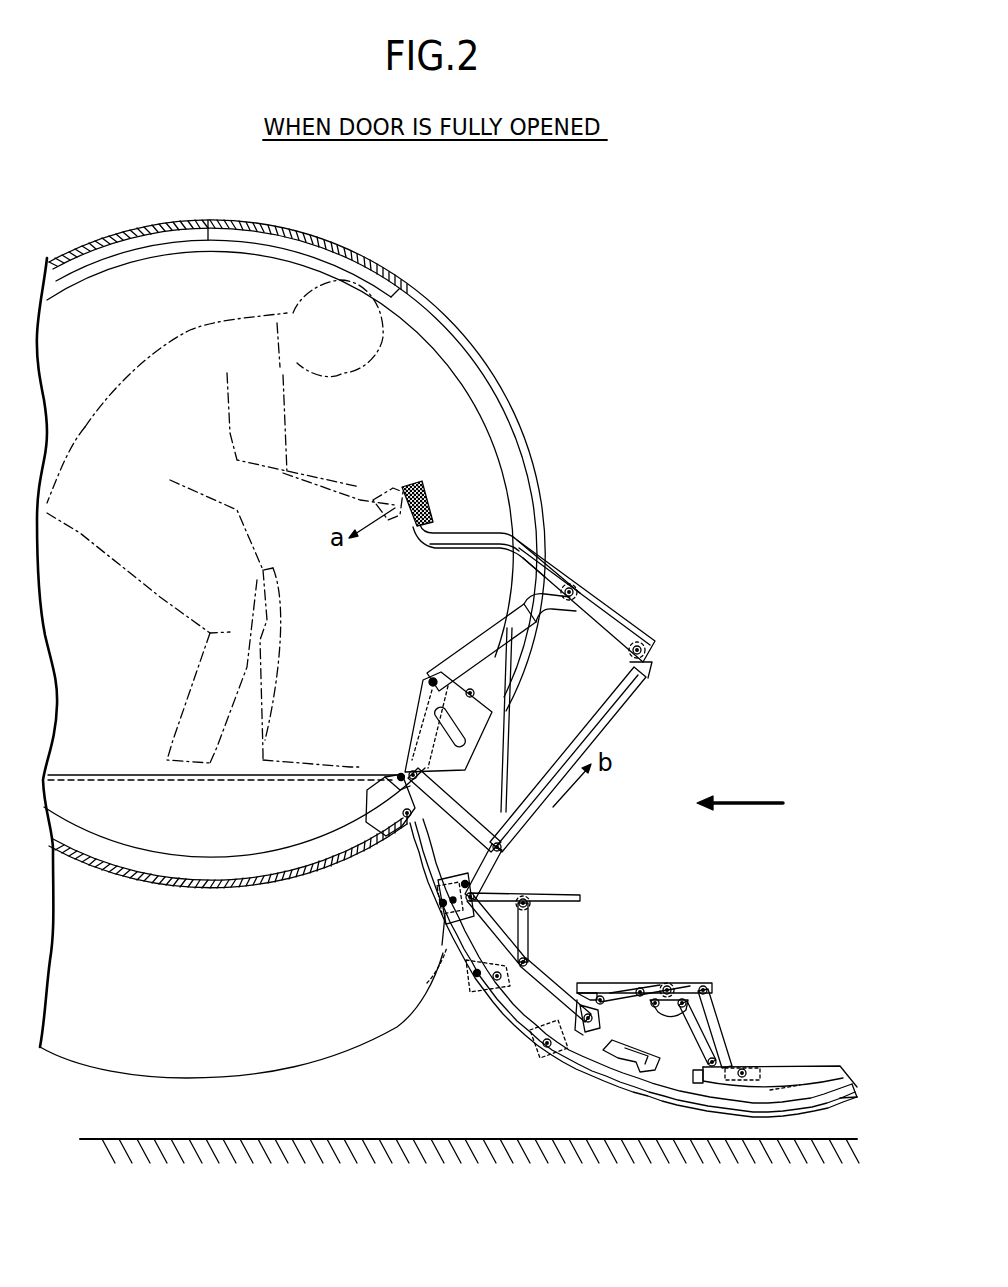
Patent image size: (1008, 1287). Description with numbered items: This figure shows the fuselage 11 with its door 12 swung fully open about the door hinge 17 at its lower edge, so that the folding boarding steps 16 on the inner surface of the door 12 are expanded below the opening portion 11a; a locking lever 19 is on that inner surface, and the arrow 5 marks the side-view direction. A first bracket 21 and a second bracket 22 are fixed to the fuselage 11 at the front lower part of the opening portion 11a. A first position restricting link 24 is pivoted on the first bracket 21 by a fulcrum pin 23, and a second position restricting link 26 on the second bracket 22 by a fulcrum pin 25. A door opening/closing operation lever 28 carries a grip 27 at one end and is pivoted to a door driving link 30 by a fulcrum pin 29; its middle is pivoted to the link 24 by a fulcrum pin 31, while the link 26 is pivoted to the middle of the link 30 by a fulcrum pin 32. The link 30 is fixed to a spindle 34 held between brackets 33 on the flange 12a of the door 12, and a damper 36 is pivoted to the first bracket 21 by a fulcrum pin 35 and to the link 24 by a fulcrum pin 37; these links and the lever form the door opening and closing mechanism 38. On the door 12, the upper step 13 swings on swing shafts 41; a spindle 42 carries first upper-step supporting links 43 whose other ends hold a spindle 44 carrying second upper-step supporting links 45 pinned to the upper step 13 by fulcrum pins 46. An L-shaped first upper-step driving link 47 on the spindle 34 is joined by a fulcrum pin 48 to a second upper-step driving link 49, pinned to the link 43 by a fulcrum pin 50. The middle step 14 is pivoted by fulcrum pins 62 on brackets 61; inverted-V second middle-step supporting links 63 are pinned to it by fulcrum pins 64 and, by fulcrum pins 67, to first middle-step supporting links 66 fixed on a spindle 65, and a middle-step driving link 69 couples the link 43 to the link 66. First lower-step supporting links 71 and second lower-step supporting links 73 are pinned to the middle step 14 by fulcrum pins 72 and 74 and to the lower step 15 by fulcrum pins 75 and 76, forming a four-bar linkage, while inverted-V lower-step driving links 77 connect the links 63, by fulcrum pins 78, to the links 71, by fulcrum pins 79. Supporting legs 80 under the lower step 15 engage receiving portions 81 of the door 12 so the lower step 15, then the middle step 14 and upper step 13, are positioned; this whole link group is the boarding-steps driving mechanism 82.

The fuselage 11 is at (382, 256).
The opening portion 11a is at (477, 378).
The door 12 is at (633, 981).
The flange 12a is at (787, 1089).
The upper step 13 is at (525, 881).
The middle step 14 is at (694, 983).
The lower step 15 is at (775, 1059).
The boarding steps 16 is at (579, 791).
The door hinge 17 is at (401, 833).
The locking lever 19 is at (643, 1056).
The first bracket 21 is at (453, 717).
The second bracket 22 is at (358, 825).
The fulcrum pin 23 is at (430, 680).
The first position restricting link 24 is at (487, 647).
The fulcrum pin 25 is at (400, 772).
The second position restricting link 26 is at (473, 827).
The grip 27 is at (427, 493).
The door opening/closing operation lever 28 is at (470, 541).
The fulcrum pin 29 is at (641, 651).
The door driving link 30 is at (597, 730).
The fulcrum pin 31 is at (571, 589).
The fulcrum pin 32 is at (501, 848).
The bracket 33 is at (477, 896).
The spindle 34 is at (466, 880).
The fulcrum pin 35 is at (420, 776).
The damper 36 is at (447, 722).
The fulcrum pin 37 is at (477, 693).
The door opening and closing mechanism 38 is at (614, 600).
The swing shaft 41 is at (422, 913).
The spindle 42 is at (447, 994).
The first upper-step supporting link 43 is at (513, 957).
The spindle 44 is at (529, 940).
The second upper-step supporting link 45 is at (547, 940).
The fulcrum pin 46 is at (528, 905).
The first upper-step driving link 47 is at (440, 896).
The fulcrum pin 48 is at (440, 912).
The second upper-step driving link 49 is at (427, 984).
The fulcrum pin 50 is at (497, 981).
The bracket 61 is at (584, 1033).
The fulcrum pin 62 is at (597, 1019).
The second middle-step supporting link 63 is at (613, 992).
The fulcrum pin 64 is at (640, 990).
The spindle 65 is at (547, 1050).
The first middle-step supporting link 66 is at (542, 1044).
The fulcrum pin 67 is at (600, 998).
The middle-step driving link 69 is at (520, 983).
The first lower-step supporting link 71 is at (714, 1031).
The fulcrum pin 72 is at (667, 988).
The second lower-step supporting link 73 is at (722, 1033).
The fulcrum pin 74 is at (706, 989).
The fulcrum pin 75 is at (707, 1061).
The fulcrum pin 76 is at (742, 1072).
The lower-step driving link 77 is at (671, 998).
The fulcrum pin 78 is at (655, 1001).
The fulcrum pin 79 is at (682, 1001).
The supporting leg 80 is at (658, 1111).
The receiving portion 81 is at (757, 1117).
The boarding-steps driving mechanism 82 is at (709, 999).
The viewing direction of FIG. 5 is at (752, 803).